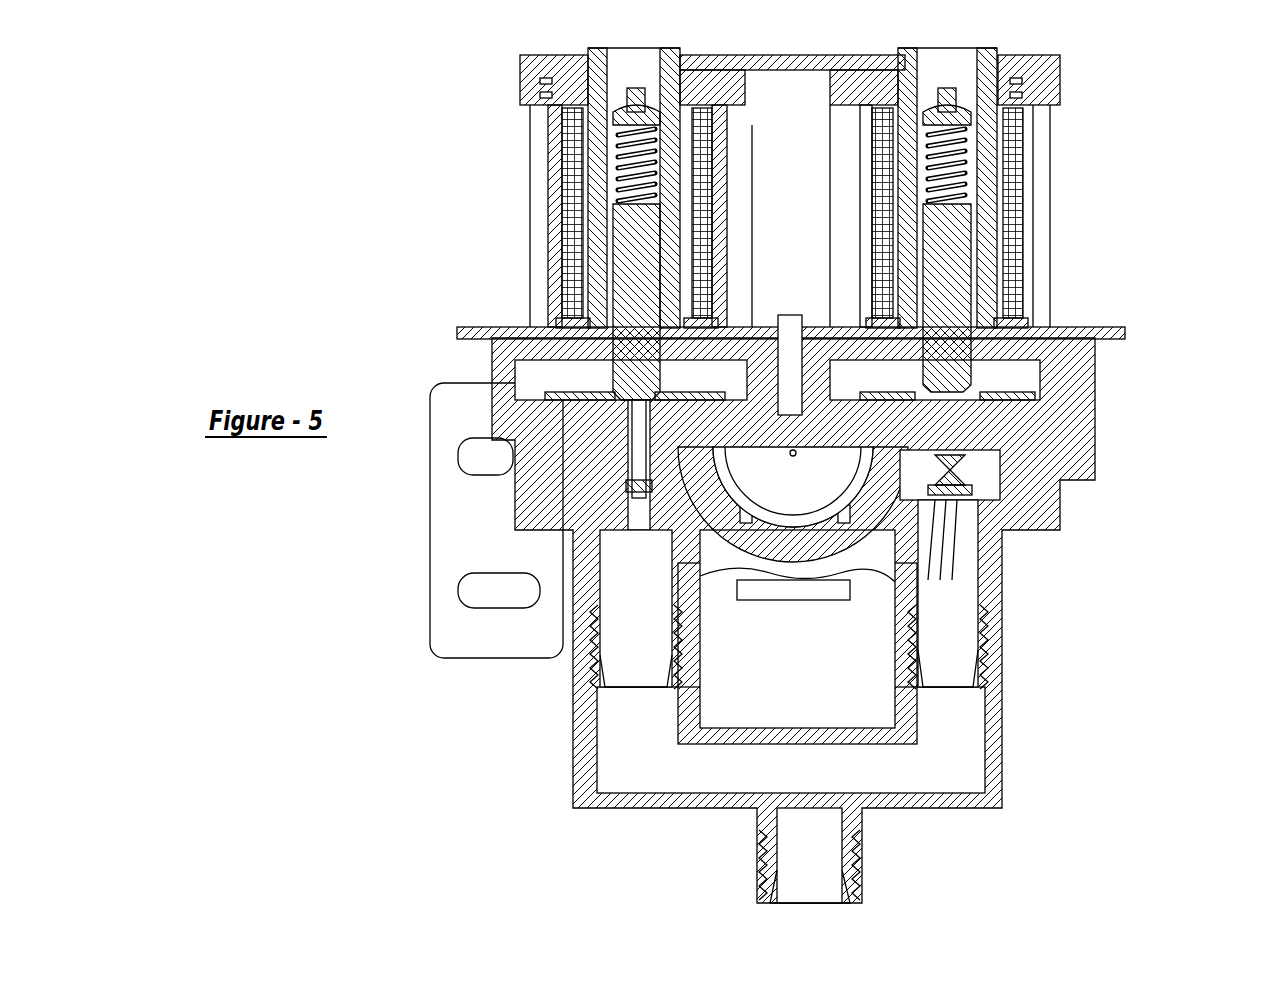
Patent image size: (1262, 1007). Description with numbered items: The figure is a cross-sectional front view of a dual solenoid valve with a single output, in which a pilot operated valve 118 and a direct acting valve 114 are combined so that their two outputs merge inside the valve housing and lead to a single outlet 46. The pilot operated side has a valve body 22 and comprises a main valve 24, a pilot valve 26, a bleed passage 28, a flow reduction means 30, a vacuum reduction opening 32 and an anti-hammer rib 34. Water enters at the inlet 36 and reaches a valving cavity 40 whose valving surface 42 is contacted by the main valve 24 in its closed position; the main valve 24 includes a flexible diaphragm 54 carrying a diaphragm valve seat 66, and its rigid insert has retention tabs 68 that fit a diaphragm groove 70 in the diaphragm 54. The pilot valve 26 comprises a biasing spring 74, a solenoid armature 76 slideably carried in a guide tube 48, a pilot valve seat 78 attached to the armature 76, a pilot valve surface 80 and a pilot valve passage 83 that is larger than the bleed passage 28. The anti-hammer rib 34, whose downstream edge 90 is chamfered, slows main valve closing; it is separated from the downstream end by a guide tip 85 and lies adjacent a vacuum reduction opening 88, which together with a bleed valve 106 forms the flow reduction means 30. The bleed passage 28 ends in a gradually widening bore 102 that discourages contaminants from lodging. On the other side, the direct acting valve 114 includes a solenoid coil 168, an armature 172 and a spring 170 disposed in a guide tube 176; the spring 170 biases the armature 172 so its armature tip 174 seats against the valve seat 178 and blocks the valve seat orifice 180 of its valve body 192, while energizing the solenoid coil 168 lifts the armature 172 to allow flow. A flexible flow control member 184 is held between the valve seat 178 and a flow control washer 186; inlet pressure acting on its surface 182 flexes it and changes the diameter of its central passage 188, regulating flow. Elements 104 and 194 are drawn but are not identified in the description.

The pilot valve 118 is at (613, 212).
The direct acting valve 114 is at (1020, 301).
The guide tube 48 is at (582, 126).
The biasing spring 74 is at (632, 162).
The pilot valve seat 78 is at (642, 225).
The pilot valve passage 83 is at (602, 300).
The bobbin 104 is at (560, 330).
The bleed valve 106 is at (495, 365).
The main valve 24 is at (456, 338).
The diaphragm valve seat 66 is at (560, 408).
The valving surface 42 is at (505, 450).
The anti-hammer rib 34 is at (568, 482).
The flow reduction means 30 is at (500, 507).
The valving cavity 40 is at (650, 492).
The vacuum reduction opening 88 is at (600, 520).
The vacuum reduction opening 32 is at (640, 505).
The guide tip 85 is at (655, 490).
The inlet 36 is at (798, 458).
The solenoid armature 76 is at (658, 240).
The pilot valve 26 is at (766, 178).
The pilot valve surface 80 is at (650, 392).
The bleed passage 28 is at (668, 398).
The valve body 22 is at (705, 405).
The gradually widening bore 102 is at (718, 378).
The diaphragm 54 is at (785, 400).
The retention tabs 68 is at (806, 372).
The diaphragm groove 70 is at (812, 352).
The solenoid coil 168 is at (1015, 122).
The spring 170 is at (1003, 168).
The armature 172 is at (962, 240).
The armature tip 174 is at (1003, 267).
The guide tube 176 is at (1010, 350).
The valve seat 178 is at (1072, 375).
The valve seat orifice 180 is at (1052, 380).
The surface 182 is at (1010, 410).
The flow control member 184 is at (988, 478).
The central passage 188 is at (1000, 492).
The valve body 192 is at (1052, 512).
The flow control washer 186 is at (985, 503).
The filter 194 is at (962, 555).
The downstream edge 90 is at (957, 603).
The single outlet 46 is at (860, 908).